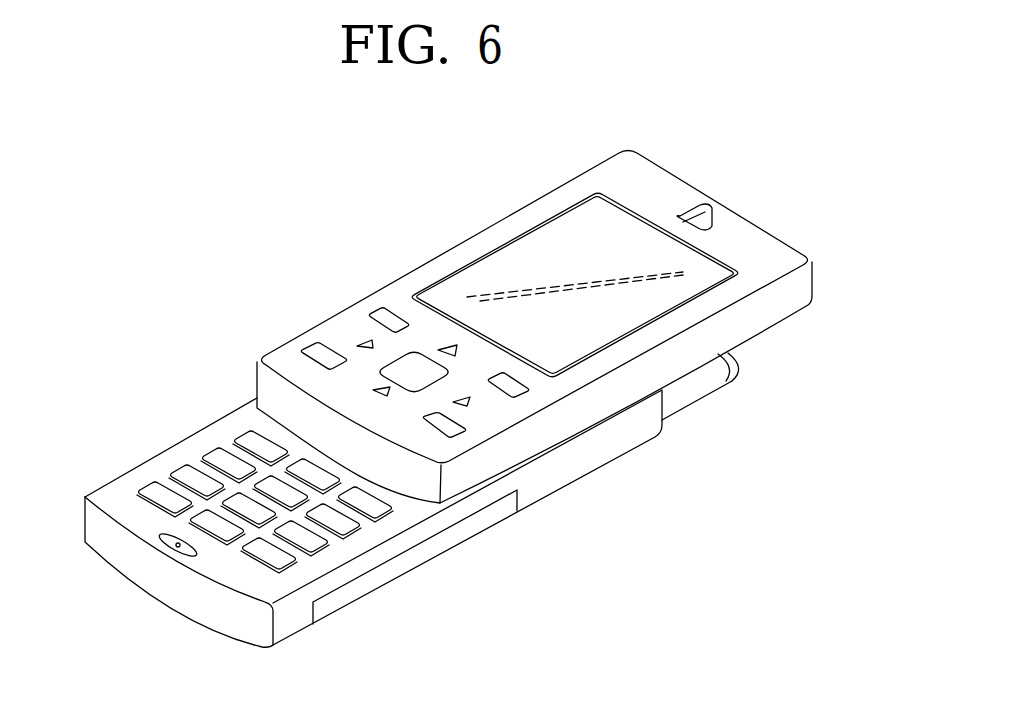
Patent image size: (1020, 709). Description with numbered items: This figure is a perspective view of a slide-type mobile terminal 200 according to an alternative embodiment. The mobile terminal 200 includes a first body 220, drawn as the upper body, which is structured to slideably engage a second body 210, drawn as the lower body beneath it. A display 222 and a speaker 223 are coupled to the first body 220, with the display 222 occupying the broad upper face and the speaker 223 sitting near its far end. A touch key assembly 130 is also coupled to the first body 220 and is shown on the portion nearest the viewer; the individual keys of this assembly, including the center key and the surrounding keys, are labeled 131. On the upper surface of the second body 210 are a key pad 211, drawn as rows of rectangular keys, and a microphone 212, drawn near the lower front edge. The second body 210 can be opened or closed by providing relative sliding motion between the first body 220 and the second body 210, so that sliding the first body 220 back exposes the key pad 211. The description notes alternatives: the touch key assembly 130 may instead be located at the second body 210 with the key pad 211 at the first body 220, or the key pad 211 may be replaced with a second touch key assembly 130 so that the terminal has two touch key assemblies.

The mobile terminal 200 is at (258, 311).
The first body 220 is at (765, 341).
The display 222 is at (517, 268).
The speaker 223 is at (697, 220).
The touch key assembly 130 is at (335, 345).
The navigation keys 131 is at (423, 358).
The second body 210 is at (557, 497).
The key pad 211 is at (313, 547).
The microphone 212 is at (165, 545).